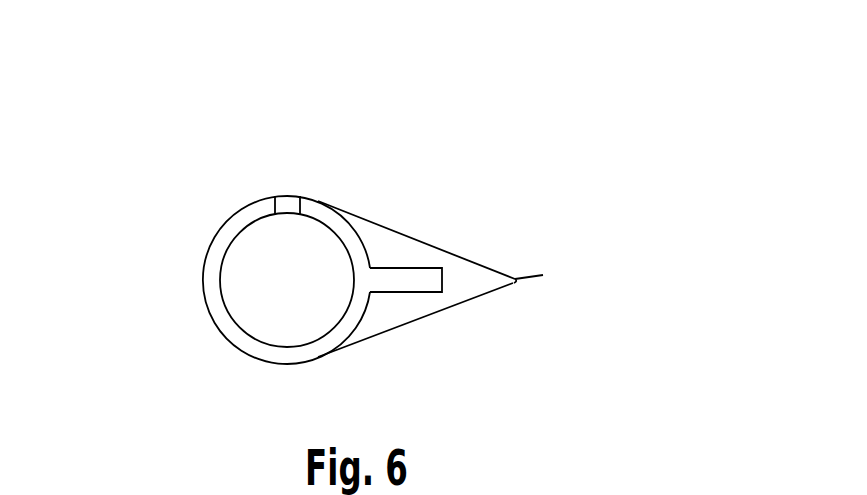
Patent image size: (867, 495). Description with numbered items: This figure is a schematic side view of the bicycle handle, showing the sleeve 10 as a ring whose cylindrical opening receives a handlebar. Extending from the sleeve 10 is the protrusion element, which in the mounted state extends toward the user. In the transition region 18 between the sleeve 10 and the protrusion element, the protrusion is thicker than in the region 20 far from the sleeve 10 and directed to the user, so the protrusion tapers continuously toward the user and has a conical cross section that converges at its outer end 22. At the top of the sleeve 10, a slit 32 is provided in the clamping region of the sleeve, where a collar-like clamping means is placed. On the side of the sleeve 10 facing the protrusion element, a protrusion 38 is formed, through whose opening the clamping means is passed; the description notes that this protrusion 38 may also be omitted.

The sleeve 10 is at (207, 282).
The slit 32 is at (292, 205).
The protrusion 38 is at (395, 278).
The transition region 18 is at (387, 213).
The region far from the sleeve 20 is at (507, 300).
The tip 22 is at (515, 281).